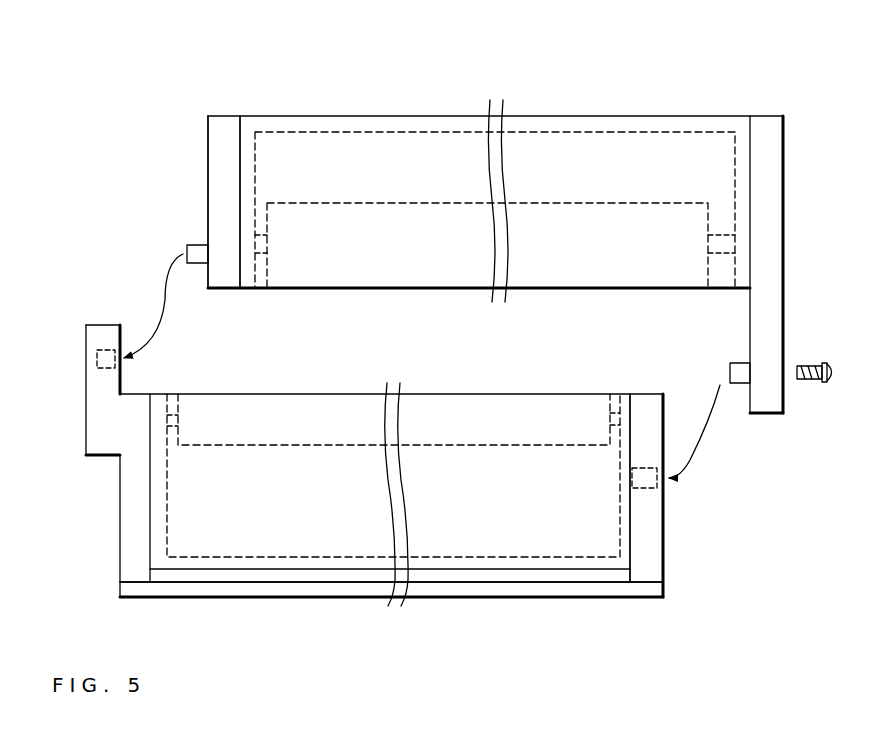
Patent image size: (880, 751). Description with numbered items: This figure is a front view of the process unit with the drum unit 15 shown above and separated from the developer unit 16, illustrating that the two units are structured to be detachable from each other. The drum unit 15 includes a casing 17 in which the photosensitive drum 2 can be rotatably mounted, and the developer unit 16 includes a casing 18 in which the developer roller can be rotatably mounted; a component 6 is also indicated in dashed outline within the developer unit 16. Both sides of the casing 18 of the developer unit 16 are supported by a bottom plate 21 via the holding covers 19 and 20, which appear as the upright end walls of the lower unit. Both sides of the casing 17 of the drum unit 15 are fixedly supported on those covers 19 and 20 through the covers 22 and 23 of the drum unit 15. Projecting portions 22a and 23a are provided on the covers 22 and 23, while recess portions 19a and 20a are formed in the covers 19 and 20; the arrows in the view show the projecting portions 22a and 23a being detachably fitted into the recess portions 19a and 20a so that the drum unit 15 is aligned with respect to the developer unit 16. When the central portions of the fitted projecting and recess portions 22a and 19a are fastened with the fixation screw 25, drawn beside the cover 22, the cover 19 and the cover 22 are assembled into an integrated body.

The photosensitive drum 2 is at (631, 225).
The cartridge holder 6 is at (262, 400).
The drum unit 15 is at (425, 103).
The developer unit 16 is at (289, 576).
The casing 17 is at (545, 115).
The casing 18 is at (165, 540).
The holding cover 19 is at (665, 562).
The recess portion 19a is at (660, 490).
The holding cover 20 is at (98, 430).
The recess portion 20a is at (92, 360).
The bottom plate 21 is at (598, 590).
The cover 22 is at (773, 160).
The projecting portion 22a is at (731, 366).
The cover 23 is at (217, 158).
The projecting portion 23a is at (186, 247).
The fixation screw 25 is at (824, 363).